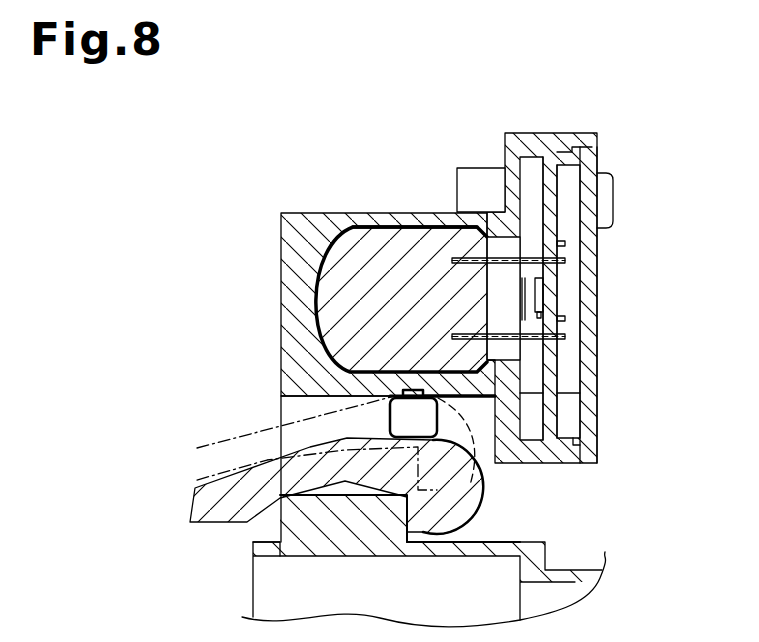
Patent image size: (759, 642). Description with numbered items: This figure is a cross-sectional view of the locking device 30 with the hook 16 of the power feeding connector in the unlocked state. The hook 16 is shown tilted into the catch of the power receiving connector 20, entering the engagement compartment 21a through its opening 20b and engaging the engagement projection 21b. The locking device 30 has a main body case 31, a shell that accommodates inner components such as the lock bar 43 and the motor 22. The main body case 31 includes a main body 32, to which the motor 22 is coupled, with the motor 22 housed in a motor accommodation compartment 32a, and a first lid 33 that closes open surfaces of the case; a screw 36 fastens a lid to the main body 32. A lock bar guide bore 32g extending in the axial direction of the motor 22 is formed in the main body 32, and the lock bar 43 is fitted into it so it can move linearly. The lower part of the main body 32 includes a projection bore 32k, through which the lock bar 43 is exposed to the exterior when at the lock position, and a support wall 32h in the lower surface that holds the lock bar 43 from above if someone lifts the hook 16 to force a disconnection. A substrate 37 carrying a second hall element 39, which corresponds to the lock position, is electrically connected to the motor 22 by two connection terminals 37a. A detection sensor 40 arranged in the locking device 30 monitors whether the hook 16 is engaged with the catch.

The hook 16 is at (238, 447).
The power receiving connector 20 is at (220, 597).
The opening 20b is at (253, 544).
The engagement compartment 21a is at (478, 542).
The engagement projection 21b is at (355, 496).
The motor 22 is at (318, 292).
The locking device 30 is at (573, 274).
The main body case 31 is at (551, 133).
The main body 32 is at (330, 213).
The motor accommodation compartment 32a is at (400, 232).
The lock bar guide bore 32g is at (437, 393).
The support wall 32h is at (358, 396).
The projection bore 32k is at (460, 480).
The first lid 33 is at (597, 244).
The screw 36 is at (616, 200).
The substrate 37 is at (557, 363).
The connection terminals 37a is at (565, 336).
The second hall element 39 is at (530, 292).
The detection sensor 40 is at (408, 390).
The lock bar 43 is at (388, 412).